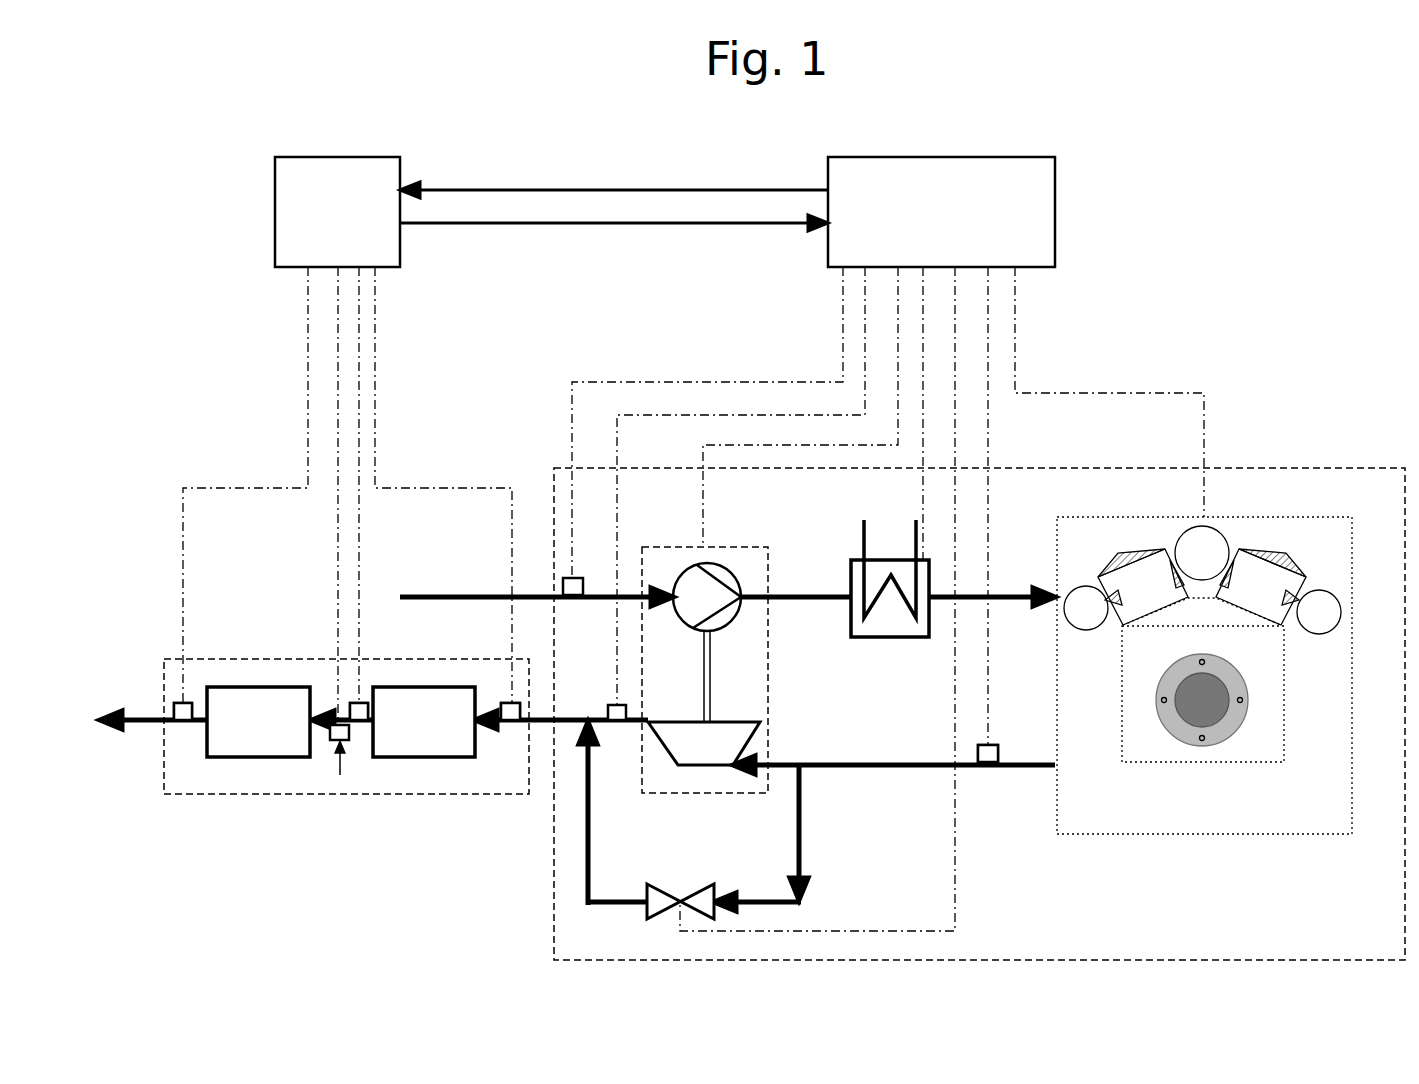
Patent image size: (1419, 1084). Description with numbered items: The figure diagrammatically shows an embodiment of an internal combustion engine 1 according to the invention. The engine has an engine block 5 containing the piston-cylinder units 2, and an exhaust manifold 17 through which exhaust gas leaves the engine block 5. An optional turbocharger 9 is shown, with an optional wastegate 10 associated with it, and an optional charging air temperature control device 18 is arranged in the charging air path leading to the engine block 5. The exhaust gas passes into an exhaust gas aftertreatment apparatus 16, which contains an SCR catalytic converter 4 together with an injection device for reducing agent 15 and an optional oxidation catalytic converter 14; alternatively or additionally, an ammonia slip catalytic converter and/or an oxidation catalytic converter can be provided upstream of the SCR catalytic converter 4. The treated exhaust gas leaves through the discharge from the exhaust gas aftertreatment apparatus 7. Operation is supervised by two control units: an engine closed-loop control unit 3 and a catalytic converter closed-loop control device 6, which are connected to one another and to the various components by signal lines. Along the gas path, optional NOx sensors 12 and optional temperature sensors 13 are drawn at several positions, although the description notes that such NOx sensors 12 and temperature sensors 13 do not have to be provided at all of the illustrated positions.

The internal combustion engine 1 is at (1248, 300).
The piston-cylinder units 2 is at (1148, 610).
The engine closed-loop control unit 3 is at (941, 227).
The SCR catalytic converter 4 is at (267, 743).
The engine block 5 is at (1314, 468).
The catalytic converter closed-loop control device 6 is at (346, 227).
The discharge from the exhaust gas aftertreatment apparatus 7 is at (205, 722).
The turbocharger 9 is at (768, 547).
The wastegate 10 is at (680, 900).
The NOx sensor 12 is at (510, 728).
The temperature sensor 13 is at (613, 722).
The oxidation catalytic converter 14 is at (441, 743).
The injection device for reducing agent 15 is at (330, 740).
The exhaust gas aftertreatment apparatus 16 is at (348, 795).
The exhaust manifold 17 is at (1042, 765).
The charging air temperature control device 18 is at (929, 560).